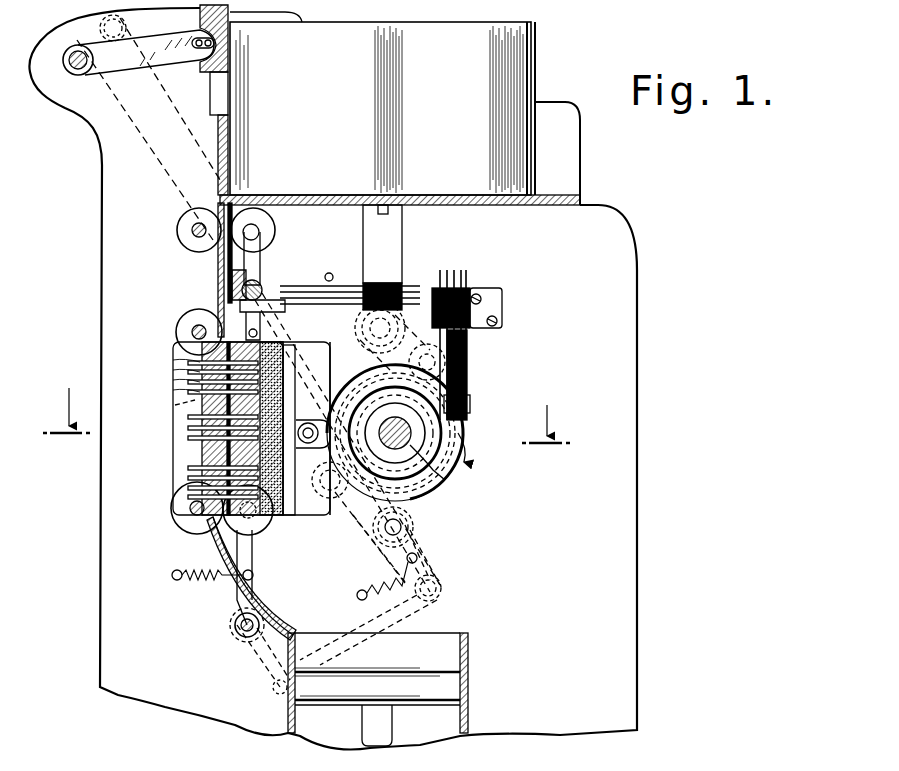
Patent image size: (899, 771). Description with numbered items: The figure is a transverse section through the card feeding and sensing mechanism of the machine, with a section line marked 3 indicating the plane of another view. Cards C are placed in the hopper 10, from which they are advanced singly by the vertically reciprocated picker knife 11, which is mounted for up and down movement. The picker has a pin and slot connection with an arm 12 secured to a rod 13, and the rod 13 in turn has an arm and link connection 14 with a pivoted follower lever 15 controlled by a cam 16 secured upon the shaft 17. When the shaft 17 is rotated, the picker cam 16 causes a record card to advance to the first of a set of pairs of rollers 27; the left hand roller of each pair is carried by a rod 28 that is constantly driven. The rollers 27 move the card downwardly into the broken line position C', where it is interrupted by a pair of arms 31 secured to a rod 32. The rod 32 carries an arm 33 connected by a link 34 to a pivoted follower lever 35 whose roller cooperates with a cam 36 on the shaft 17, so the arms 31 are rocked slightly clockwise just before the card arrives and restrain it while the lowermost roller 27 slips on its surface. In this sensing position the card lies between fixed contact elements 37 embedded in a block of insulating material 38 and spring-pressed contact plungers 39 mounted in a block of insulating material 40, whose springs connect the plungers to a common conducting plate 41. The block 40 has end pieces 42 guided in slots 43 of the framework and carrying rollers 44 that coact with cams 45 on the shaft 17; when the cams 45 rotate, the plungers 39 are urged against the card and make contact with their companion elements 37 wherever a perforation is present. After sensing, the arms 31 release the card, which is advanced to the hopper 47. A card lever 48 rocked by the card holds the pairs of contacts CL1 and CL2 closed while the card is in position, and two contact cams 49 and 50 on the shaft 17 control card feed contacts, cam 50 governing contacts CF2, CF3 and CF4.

The hopper 10 is at (562, 118).
The picker knife 11 is at (228, 34).
The arm 12 is at (164, 45).
The rod 13 is at (64, 62).
The arm and link connection 14 is at (135, 90).
The follower lever 15 is at (465, 340).
The cam 16 is at (462, 352).
The shaft 17 is at (440, 492).
The rollers 27 is at (180, 320).
The rod 28 is at (192, 228).
The arms 31 is at (218, 585).
The rod 32 is at (236, 632).
The arm 33 is at (255, 668).
The link 34 is at (436, 600).
The follower lever 35 is at (360, 538).
The cam 36 is at (463, 470).
The contact elements 37 is at (190, 418).
The block of insulating material 38 is at (190, 352).
The contact plunger 39 is at (288, 384).
The block of insulating material 40 is at (272, 525).
The conducting plate 41 is at (292, 516).
The end pieces 42 is at (308, 422).
The slots 43 is at (368, 338).
The rollers 44 is at (324, 470).
The cams 45 is at (425, 505).
The hopper 47 is at (440, 672).
The card lever 48 is at (270, 285).
The contact cam 49 is at (462, 398).
The contact cam 50 is at (440, 478).
The cards C is at (390, 103).
The sensing position C' is at (167, 404).
The contacts CL1 is at (305, 290).
The contacts CL2 is at (330, 296).
The card feed contacts CF2 is at (470, 398).
The card feed contacts CF3 is at (468, 410).
The card feed contacts CF4 is at (478, 425).
The section line 3 is at (306, 427).